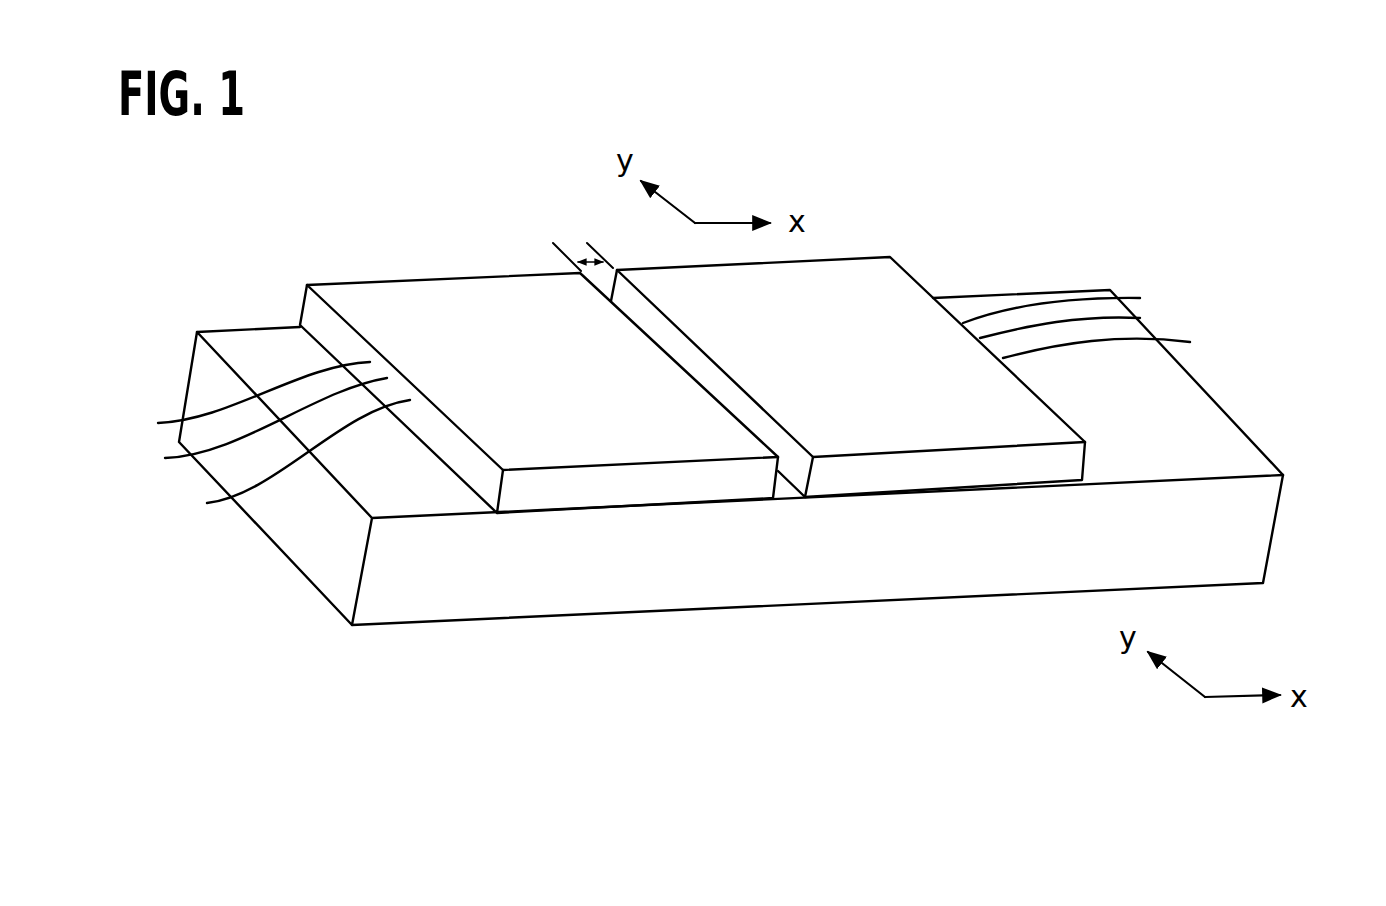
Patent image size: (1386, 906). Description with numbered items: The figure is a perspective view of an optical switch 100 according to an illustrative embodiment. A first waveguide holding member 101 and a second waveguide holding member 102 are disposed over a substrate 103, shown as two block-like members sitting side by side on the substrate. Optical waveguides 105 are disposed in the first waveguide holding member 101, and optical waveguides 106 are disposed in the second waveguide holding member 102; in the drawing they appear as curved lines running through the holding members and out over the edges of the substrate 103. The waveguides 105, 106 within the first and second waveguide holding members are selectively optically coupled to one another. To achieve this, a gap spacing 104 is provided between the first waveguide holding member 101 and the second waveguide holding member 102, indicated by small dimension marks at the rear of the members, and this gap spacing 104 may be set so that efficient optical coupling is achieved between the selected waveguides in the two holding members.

The optical switch 100 is at (1088, 182).
The first waveguide holding member 101 is at (877, 257).
The second waveguide holding member 102 is at (427, 278).
The substrate 103 is at (1280, 503).
The gap spacing 104 is at (582, 262).
The optical waveguides 105 is at (1133, 298).
The optical waveguides 106 is at (158, 422).